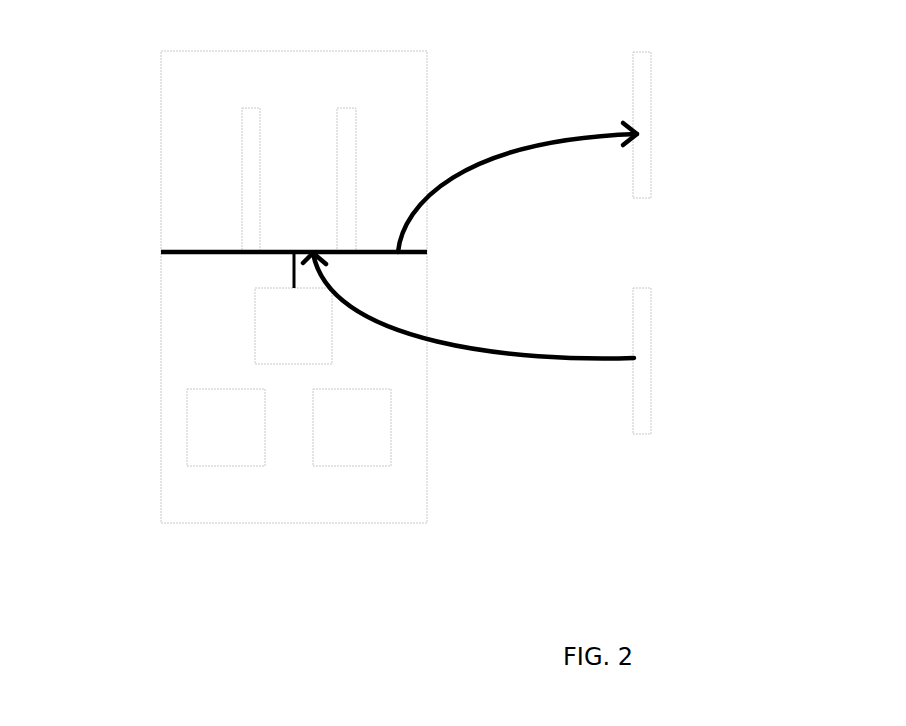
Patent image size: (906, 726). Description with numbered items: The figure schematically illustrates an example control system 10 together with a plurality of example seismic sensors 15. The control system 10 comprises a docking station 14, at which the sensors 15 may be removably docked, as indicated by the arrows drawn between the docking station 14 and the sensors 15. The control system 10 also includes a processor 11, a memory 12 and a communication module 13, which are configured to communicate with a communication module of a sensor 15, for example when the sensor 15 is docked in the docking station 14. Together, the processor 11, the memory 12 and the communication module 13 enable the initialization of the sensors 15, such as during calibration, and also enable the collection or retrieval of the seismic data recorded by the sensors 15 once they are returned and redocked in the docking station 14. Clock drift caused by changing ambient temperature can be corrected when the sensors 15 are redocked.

The control system 10 is at (161, 111).
The processor 11 is at (212, 443).
The memory 12 is at (338, 443).
The communication module 13 is at (279, 340).
The docking station 14 is at (217, 253).
The seismic sensors 15 is at (242, 205).